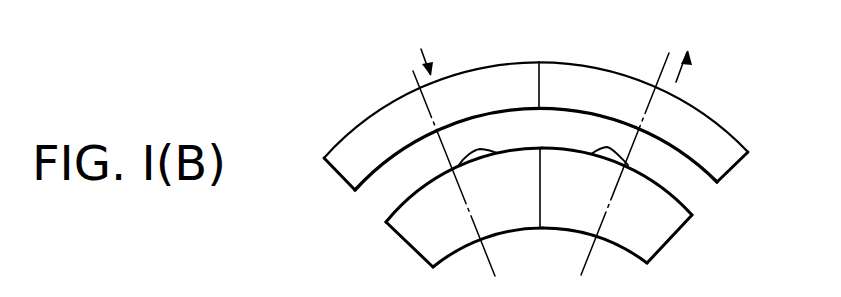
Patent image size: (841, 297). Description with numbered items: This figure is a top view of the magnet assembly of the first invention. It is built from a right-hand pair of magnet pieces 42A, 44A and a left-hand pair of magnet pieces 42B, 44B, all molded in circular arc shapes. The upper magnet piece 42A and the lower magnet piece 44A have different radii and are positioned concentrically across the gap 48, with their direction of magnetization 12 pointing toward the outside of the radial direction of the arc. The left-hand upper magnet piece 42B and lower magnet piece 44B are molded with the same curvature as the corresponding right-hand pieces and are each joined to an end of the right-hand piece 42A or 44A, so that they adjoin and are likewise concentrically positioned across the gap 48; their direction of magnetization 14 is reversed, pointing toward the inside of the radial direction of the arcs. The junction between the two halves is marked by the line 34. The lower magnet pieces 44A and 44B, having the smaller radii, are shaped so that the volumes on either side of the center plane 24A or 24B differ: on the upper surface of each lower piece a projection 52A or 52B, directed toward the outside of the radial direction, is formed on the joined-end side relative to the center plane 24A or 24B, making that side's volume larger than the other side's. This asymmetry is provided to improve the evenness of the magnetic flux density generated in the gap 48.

The direction of magnetization 12 is at (678, 76).
The direction of magnetization 14 is at (421, 49).
The center plane 24A is at (662, 73).
The center plane 24B is at (413, 73).
The dividing line 34 is at (541, 72).
The upper magnet piece 42A is at (723, 140).
The upper magnet piece 42B is at (351, 150).
The lower magnet piece 44A is at (663, 256).
The lower magnet piece 44B is at (420, 238).
The gap 48 is at (696, 208).
The projection 52A is at (619, 165).
The projection 52B is at (463, 163).